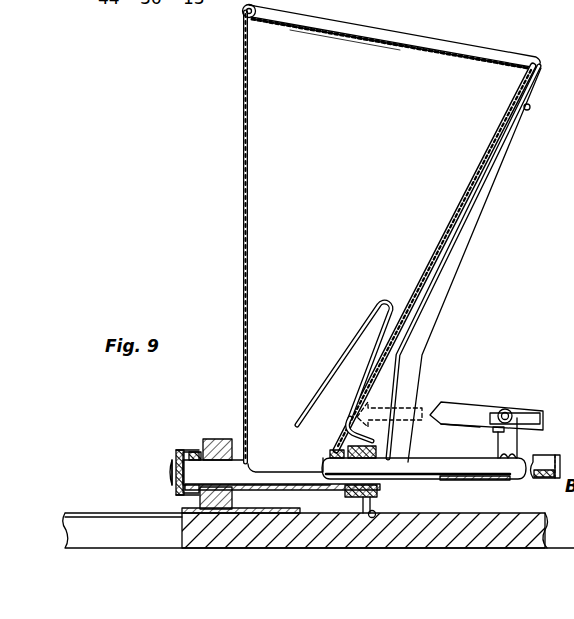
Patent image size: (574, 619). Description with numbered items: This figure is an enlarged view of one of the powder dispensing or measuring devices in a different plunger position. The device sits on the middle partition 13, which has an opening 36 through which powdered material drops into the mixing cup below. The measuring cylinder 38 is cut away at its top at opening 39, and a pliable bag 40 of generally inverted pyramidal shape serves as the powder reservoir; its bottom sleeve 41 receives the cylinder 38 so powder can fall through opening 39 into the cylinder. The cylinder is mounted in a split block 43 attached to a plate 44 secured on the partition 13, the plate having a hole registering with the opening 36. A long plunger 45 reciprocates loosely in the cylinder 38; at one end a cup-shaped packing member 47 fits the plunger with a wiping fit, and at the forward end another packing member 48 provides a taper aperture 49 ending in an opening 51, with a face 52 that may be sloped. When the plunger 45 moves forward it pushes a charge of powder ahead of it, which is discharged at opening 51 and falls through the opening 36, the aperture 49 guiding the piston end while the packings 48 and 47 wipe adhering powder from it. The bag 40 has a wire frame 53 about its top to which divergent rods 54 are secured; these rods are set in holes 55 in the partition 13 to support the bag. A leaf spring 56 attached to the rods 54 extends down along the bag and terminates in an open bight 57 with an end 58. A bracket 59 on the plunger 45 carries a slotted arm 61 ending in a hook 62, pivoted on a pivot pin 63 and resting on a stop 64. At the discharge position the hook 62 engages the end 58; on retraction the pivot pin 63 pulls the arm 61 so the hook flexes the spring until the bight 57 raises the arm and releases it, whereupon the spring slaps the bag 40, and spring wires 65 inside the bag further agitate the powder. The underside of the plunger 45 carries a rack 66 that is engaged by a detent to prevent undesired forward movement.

The middle partition 13 is at (483, 533).
The opening 36 is at (167, 540).
The cylinder 38 is at (302, 489).
The opening 39 is at (262, 474).
The bag 40 is at (243, 256).
The bottom sleeve 41 is at (292, 488).
The split block 43 is at (216, 439).
The plate 44 is at (83, 513).
The plunger 45 is at (458, 463).
The cup-shaped packing member 47 is at (364, 492).
The packing member 48 is at (193, 452).
The taper aperture 49 is at (175, 457).
The opening 51 is at (172, 478).
The face 52 is at (171, 468).
The wire frame 53 is at (243, 12).
The divergent rods 54 is at (463, 258).
The holes 55 is at (380, 518).
The leaf spring 56 is at (398, 362).
The open bight 57 is at (374, 433).
The end 58 is at (363, 418).
The bracket 59 is at (518, 439).
The slotted arm 61 is at (463, 406).
The hook 62 is at (482, 427).
The pivot pin 63 is at (512, 412).
The stop 64 is at (498, 434).
The spring wires 65 is at (323, 380).
The rack 66 is at (541, 479).